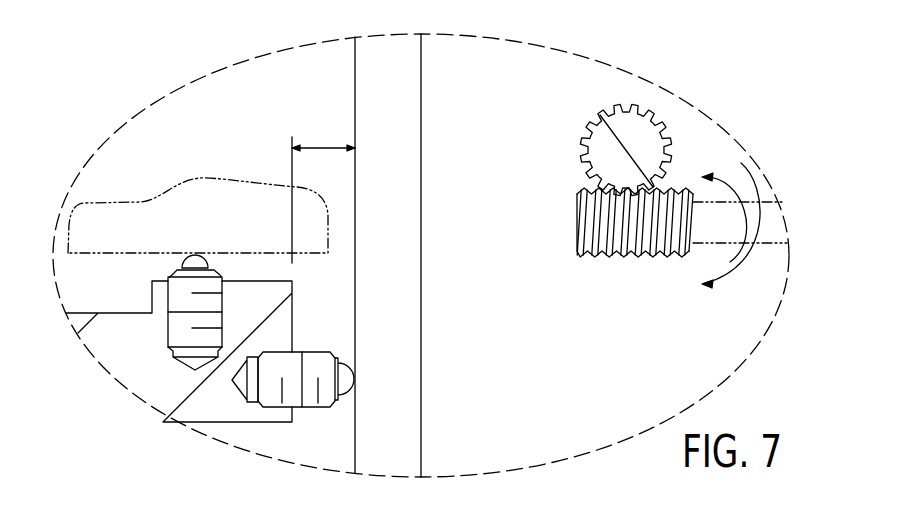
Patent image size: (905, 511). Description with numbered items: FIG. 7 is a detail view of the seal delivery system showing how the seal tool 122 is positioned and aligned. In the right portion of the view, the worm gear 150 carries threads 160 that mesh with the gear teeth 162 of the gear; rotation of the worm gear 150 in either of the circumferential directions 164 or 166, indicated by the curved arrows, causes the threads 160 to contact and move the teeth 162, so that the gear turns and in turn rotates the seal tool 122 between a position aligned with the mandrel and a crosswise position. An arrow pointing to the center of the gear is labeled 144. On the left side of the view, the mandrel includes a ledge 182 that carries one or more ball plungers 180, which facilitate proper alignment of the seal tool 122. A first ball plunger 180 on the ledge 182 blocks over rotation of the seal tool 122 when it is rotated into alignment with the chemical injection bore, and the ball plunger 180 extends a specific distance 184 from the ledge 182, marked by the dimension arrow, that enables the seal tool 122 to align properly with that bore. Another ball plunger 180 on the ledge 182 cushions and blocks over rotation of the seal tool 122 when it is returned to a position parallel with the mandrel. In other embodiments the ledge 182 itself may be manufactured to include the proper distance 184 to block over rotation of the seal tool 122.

The seal tool 122 is at (188, 229).
The pivot axis 144 is at (626, 150).
The worm gear 150 is at (717, 232).
The threads 160 is at (637, 257).
The gear teeth 162 is at (590, 131).
The circumferential direction 164 is at (729, 174).
The circumferential direction 166 is at (748, 270).
The ball plunger 180 is at (175, 328).
The ledge 182 is at (142, 385).
The specific distance 184 is at (324, 148).